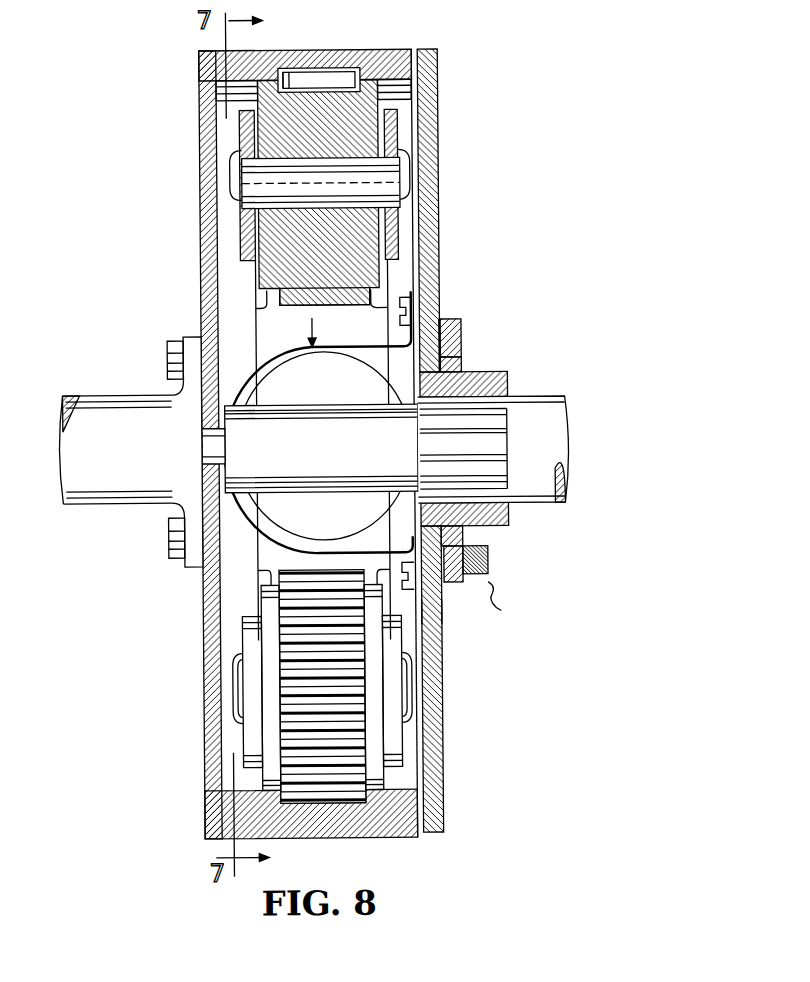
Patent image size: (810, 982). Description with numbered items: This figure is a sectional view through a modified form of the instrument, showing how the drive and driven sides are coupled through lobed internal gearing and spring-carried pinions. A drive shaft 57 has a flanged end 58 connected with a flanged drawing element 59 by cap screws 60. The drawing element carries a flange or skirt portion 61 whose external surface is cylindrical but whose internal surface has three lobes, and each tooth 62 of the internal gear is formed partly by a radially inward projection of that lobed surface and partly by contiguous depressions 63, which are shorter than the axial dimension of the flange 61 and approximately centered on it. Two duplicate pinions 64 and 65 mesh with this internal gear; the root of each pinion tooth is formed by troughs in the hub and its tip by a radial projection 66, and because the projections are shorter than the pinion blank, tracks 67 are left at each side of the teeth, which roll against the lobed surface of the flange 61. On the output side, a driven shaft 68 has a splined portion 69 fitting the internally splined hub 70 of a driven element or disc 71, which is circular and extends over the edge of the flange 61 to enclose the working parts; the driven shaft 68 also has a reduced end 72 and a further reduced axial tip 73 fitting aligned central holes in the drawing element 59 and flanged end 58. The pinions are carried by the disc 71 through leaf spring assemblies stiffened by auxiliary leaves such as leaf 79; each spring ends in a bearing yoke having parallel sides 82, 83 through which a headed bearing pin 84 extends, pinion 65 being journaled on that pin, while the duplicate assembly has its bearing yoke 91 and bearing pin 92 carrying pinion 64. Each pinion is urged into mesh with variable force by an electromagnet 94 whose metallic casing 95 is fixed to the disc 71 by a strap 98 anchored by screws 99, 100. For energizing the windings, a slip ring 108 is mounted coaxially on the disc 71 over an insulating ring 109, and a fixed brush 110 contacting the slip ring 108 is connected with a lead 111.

The drive shaft 57 is at (136, 483).
The flanged end 58 is at (192, 337).
The flanged drawing element 59 is at (196, 667).
The cap screws 60 is at (168, 553).
The flange or skirt portion 61 is at (382, 828).
The tooth of the internal gear 62 is at (342, 78).
The depressions or troughs 63 is at (300, 72).
The pinion 64 is at (273, 268).
The pinion 65 is at (320, 803).
The radial projection 66 is at (290, 303).
The tracks 67 is at (262, 308).
The driven shaft 68 is at (535, 405).
The splined portion 69 is at (500, 464).
The internally splined hub 70 is at (487, 378).
The driven element or disc 71 is at (440, 76).
The reduced end 72 is at (297, 490).
The reduced axial tip 73 is at (227, 447).
The auxiliary leaf 79 is at (268, 362).
The side of the yoke 82 is at (250, 740).
The side of the yoke 83 is at (402, 742).
The bearing pin 84 is at (410, 688).
The bearing yoke 91 is at (246, 130).
The bearing pin 92 is at (389, 183).
The electromagnet 94 is at (315, 327).
The metallic casing 95 is at (364, 398).
The strap 98 is at (404, 562).
The screw 99 is at (410, 310).
The screw 100 is at (440, 612).
The slip ring 108 is at (460, 340).
The insulating ring 109 is at (440, 332).
The fixed brush 110 is at (488, 562).
The lead 111 is at (498, 604).